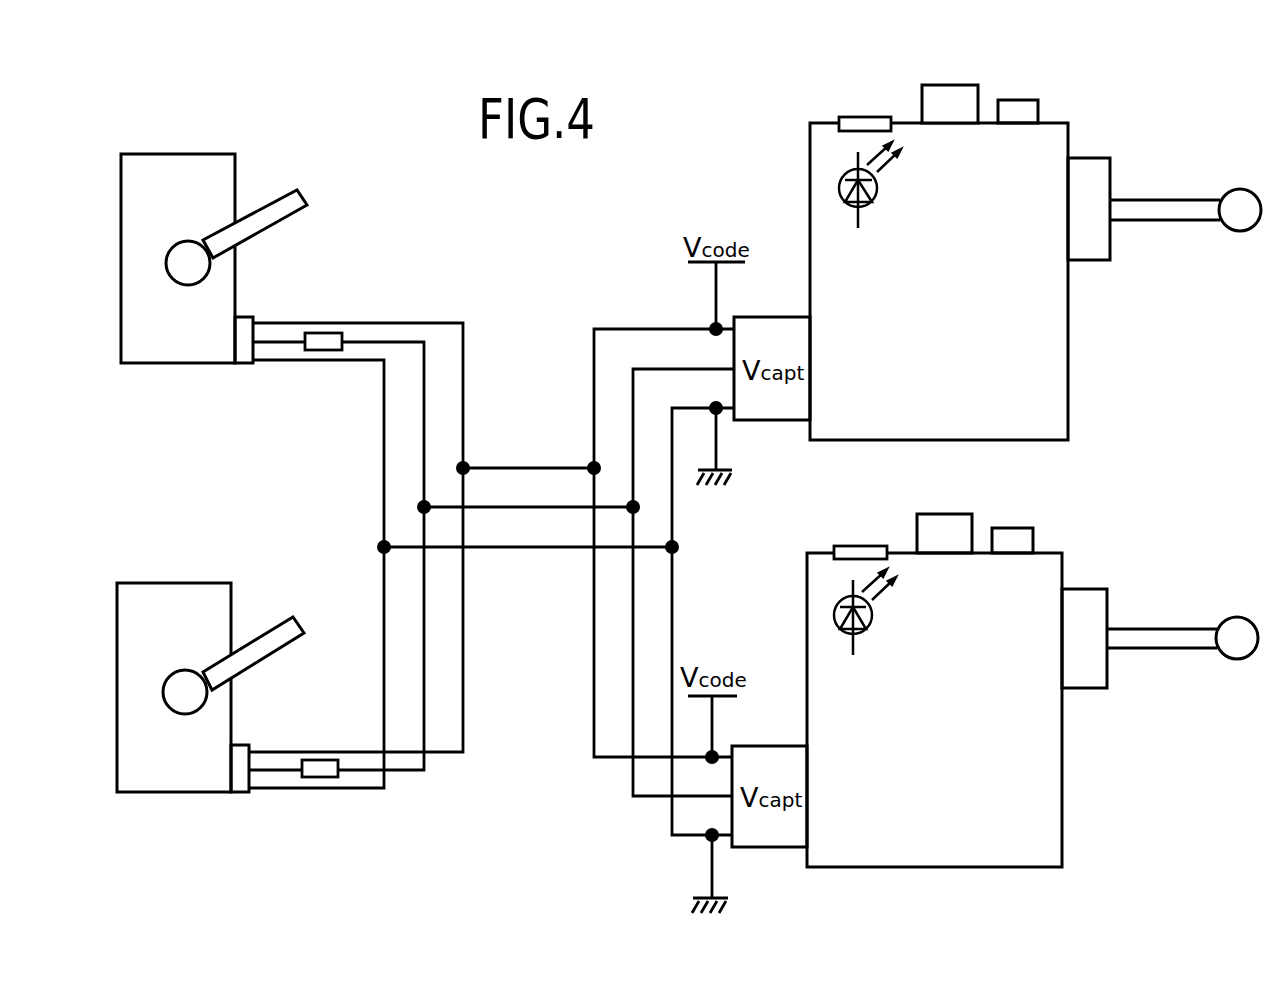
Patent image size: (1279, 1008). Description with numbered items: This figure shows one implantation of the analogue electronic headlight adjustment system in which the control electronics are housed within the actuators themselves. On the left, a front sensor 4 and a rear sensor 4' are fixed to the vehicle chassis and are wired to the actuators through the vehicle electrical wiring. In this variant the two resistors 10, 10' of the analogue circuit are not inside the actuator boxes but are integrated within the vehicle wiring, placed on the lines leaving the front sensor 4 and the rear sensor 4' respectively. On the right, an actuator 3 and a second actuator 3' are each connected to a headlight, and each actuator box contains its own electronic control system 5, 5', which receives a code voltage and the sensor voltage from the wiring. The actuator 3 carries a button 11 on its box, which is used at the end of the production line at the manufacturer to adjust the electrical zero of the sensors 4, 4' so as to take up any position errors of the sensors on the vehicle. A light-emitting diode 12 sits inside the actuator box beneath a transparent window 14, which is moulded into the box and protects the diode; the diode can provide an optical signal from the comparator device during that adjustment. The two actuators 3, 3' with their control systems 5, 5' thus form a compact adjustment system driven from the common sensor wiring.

The front sensor 4 is at (191, 258).
The rear sensor 4' is at (188, 687).
The resistor 10 is at (321, 358).
The resistor 10' is at (318, 789).
The electronic control system 5 is at (939, 270).
The actuator 3 is at (1091, 277).
The electronic control system 5' is at (934, 690).
The actuator 3' is at (1087, 705).
The button 11 is at (940, 92).
The light-emitting diode 12 is at (875, 192).
The transparent window 14 is at (862, 120).